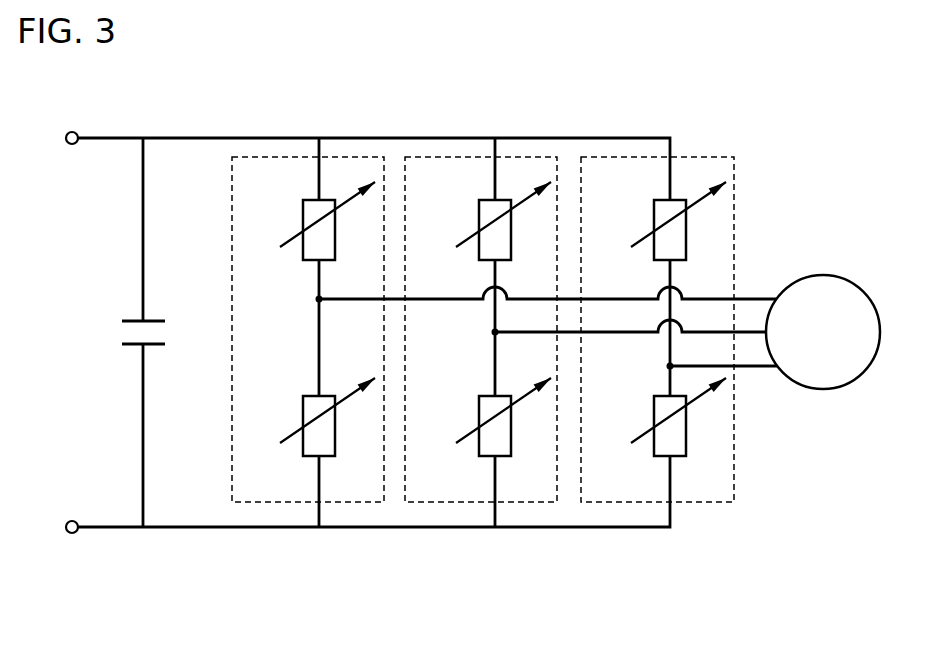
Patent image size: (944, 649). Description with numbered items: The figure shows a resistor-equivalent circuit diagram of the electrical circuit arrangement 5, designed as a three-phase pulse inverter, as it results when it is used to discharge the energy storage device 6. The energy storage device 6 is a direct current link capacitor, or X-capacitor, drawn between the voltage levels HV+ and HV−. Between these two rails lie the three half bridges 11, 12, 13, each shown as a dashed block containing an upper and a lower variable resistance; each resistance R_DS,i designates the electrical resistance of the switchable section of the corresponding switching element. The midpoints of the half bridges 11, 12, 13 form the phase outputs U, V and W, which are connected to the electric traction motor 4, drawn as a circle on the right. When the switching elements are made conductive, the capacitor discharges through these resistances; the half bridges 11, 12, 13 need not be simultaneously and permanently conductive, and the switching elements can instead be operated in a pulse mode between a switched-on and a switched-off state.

The electric traction motor 4 is at (822, 276).
The electrical circuit arrangement 5 is at (431, 335).
The energy storage device 6 is at (128, 320).
The half bridge 11 is at (273, 502).
The half bridge 12 is at (453, 502).
The half bridge 13 is at (634, 502).